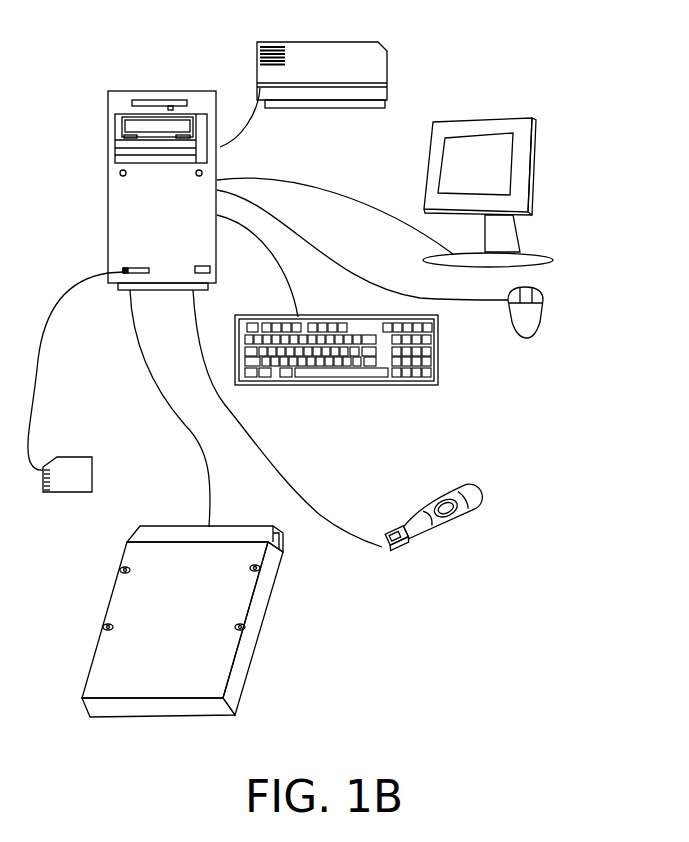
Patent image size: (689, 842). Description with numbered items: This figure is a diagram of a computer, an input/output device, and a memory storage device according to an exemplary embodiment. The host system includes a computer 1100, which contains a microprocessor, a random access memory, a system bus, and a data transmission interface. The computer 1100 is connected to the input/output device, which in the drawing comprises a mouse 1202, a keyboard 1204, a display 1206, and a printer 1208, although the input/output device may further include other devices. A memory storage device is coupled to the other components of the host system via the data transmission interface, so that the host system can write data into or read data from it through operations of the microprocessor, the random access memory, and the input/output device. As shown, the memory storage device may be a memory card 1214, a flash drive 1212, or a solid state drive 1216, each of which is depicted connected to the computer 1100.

The computer 1100 is at (165, 91).
The mouse 1202 is at (544, 317).
The keyboard 1204 is at (437, 362).
The display 1206 is at (488, 118).
The printer 1208 is at (318, 41).
The flash drive 1212 is at (432, 507).
The memory card 1214 is at (95, 463).
The solid state drive 1216 is at (231, 514).